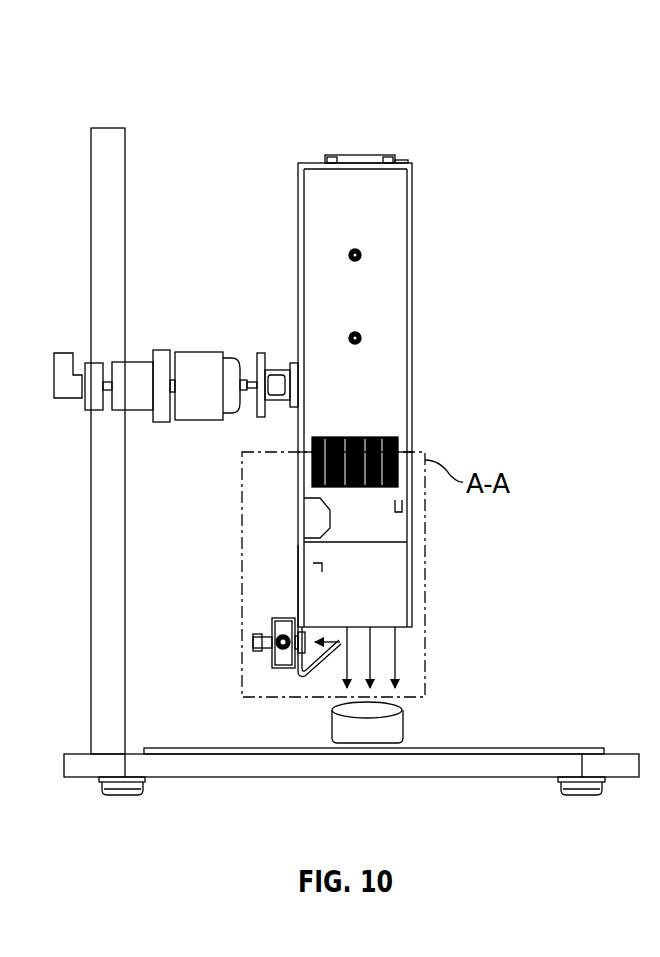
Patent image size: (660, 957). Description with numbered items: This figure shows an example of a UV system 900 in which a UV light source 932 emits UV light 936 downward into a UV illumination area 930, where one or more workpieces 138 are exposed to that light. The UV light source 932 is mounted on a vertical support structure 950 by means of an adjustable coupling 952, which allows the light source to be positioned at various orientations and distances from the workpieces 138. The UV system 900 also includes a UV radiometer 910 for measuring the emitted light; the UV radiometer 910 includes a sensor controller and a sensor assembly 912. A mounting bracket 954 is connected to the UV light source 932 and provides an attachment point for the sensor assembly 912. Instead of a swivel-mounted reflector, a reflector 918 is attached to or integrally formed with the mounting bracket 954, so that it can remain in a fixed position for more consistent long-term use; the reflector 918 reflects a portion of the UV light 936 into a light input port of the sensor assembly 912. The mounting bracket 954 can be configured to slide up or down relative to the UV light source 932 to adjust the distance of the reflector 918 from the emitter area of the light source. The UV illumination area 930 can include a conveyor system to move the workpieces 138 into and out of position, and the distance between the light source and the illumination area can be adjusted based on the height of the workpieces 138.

The UV system 900 is at (103, 65).
The support structure 950 is at (125, 215).
The UV illumination area 930 is at (318, 748).
The UV light source 932 is at (398, 270).
The adjustable coupling 952 is at (200, 352).
The mounting bracket 954 is at (297, 582).
The UV radiometer 910 is at (256, 659).
The sensor assembly 912 is at (272, 637).
The reflector 918 is at (297, 680).
The UV light 936 is at (398, 665).
The workpieces 138 is at (405, 730).